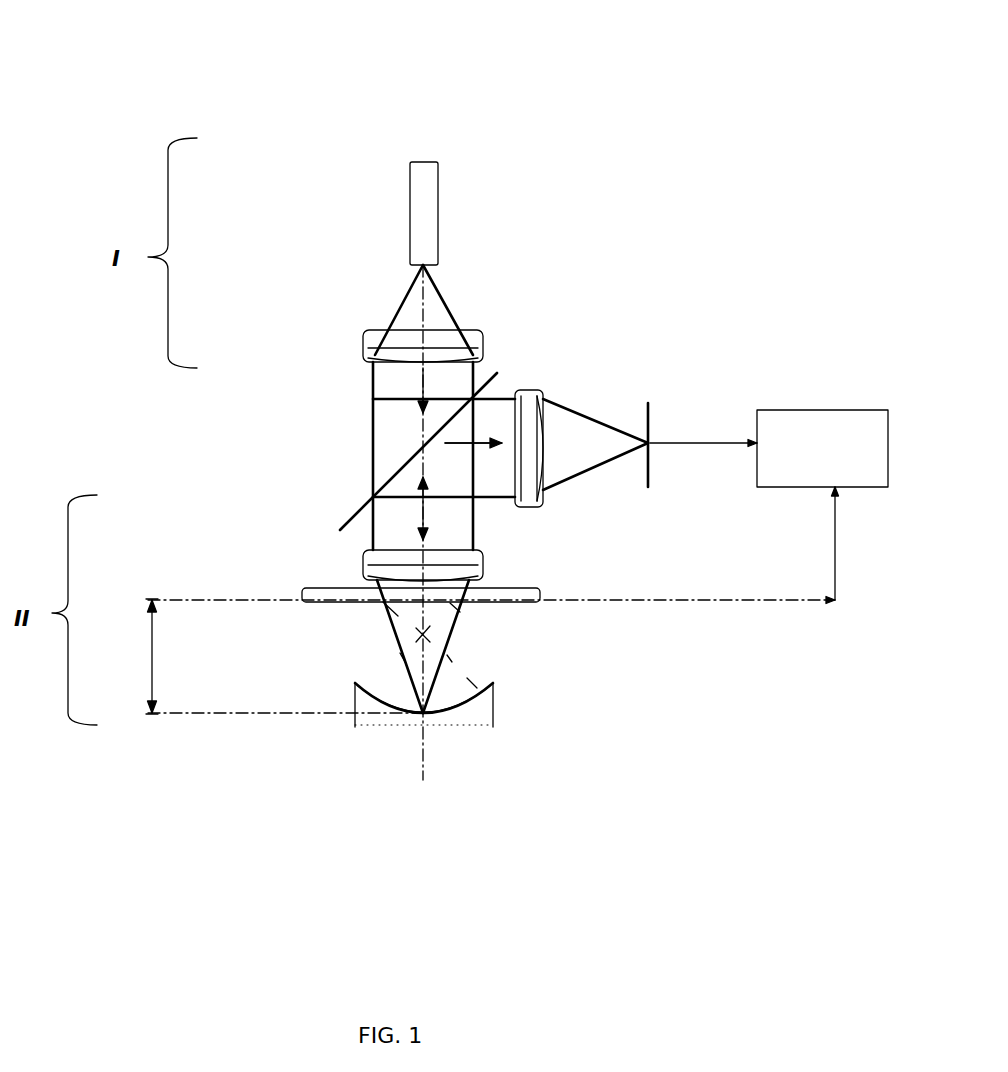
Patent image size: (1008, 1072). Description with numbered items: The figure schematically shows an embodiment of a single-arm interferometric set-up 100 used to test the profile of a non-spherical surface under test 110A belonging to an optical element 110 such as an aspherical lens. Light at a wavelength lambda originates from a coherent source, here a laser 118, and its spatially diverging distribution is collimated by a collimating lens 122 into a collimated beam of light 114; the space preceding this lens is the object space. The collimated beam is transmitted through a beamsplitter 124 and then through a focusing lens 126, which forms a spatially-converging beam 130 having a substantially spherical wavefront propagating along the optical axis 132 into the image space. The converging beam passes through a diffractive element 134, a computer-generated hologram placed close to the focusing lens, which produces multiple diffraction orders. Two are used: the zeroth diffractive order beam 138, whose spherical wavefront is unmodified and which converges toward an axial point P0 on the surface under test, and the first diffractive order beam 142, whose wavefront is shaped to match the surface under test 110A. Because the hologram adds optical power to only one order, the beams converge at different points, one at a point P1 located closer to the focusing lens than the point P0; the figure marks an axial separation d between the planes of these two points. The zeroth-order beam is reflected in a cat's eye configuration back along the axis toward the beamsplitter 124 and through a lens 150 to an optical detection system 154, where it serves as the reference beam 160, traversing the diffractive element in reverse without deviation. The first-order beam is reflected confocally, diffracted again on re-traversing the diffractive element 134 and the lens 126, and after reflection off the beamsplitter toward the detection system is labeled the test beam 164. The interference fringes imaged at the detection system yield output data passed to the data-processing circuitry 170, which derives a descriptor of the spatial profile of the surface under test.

The single-arm interferometric set-up 100 is at (460, 78).
The optical element 110 is at (493, 702).
The surface under test 110A is at (380, 690).
The collimated beam of light 114 is at (437, 313).
The laser 118 is at (403, 197).
The collimating lens 122 is at (362, 327).
The beamsplitter 124 is at (352, 513).
The focusing lens 126 is at (490, 573).
The spatially-converging beam 130 is at (435, 630).
The optical axis 132 is at (423, 775).
The diffractive element 134 is at (297, 592).
The zeroth diffractive order beam 138 is at (385, 629).
The first diffractive order beam 142 is at (463, 666).
The lens 150 is at (540, 395).
The optical detection system 154 is at (650, 441).
The reference beam 160 is at (533, 337).
The test beam 164 is at (483, 435).
The data-processing circuitry 170 is at (769, 505).
The axial point P0 is at (417, 720).
The convergence point P1 is at (432, 632).
The distance d is at (142, 656).